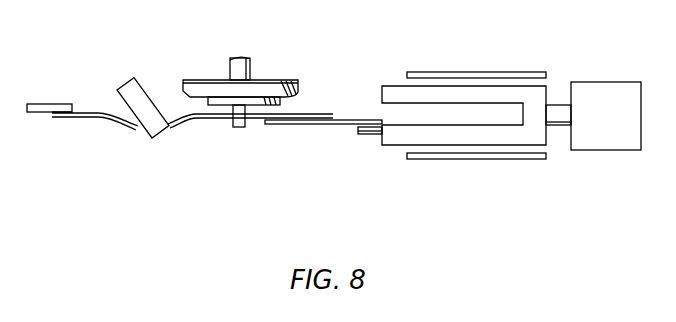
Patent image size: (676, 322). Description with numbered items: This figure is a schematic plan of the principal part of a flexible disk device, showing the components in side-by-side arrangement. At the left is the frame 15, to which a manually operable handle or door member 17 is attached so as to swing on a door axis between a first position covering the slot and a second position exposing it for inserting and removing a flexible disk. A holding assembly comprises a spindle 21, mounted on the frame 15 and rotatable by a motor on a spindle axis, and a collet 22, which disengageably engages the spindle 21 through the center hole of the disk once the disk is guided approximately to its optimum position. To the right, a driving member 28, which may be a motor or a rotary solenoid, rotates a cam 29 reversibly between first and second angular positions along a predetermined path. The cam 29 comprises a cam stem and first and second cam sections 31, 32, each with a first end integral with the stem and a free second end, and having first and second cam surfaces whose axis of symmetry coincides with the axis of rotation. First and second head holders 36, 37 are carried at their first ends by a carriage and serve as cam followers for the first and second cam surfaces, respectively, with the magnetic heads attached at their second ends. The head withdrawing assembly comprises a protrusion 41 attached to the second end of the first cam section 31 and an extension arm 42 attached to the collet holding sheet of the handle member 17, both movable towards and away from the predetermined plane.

The frame 15 is at (53, 103).
The handle member 17 is at (167, 129).
The spindle 21 is at (205, 80).
The collet 22 is at (290, 102).
The driving member 28 is at (600, 82).
The cam 29 is at (551, 148).
The first cam section 31 is at (398, 144).
The second cam section 32 is at (393, 85).
The first head holder 36 is at (487, 160).
The second head holder 37 is at (487, 72).
The protrusion 41 is at (360, 135).
The extension arm 42 is at (360, 120).